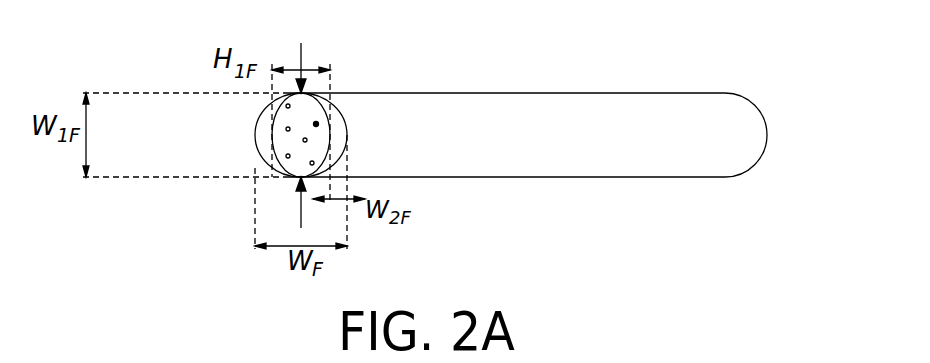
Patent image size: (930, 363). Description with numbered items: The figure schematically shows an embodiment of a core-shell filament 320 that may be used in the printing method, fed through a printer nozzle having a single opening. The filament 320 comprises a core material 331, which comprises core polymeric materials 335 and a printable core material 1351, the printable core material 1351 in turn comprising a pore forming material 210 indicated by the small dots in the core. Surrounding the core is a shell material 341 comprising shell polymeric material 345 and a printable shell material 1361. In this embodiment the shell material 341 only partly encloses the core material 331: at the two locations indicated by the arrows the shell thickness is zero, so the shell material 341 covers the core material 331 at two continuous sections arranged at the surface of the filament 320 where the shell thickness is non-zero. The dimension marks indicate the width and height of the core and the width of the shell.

The pore forming material 210 is at (316, 124).
The filament 320 is at (731, 76).
The shell material 341 is at (526, 107).
The shell polymeric material 345 is at (526, 107).
The printable shell material 1361 is at (385, 113).
The printable core material 1351 is at (227, 135).
The core material 331 is at (227, 135).
The core polymeric materials 335 is at (283, 143).